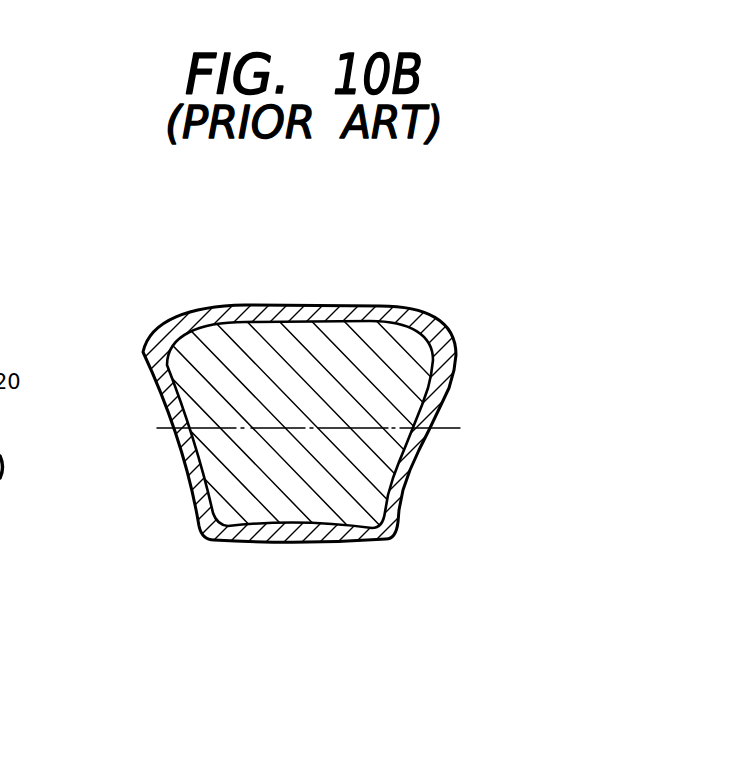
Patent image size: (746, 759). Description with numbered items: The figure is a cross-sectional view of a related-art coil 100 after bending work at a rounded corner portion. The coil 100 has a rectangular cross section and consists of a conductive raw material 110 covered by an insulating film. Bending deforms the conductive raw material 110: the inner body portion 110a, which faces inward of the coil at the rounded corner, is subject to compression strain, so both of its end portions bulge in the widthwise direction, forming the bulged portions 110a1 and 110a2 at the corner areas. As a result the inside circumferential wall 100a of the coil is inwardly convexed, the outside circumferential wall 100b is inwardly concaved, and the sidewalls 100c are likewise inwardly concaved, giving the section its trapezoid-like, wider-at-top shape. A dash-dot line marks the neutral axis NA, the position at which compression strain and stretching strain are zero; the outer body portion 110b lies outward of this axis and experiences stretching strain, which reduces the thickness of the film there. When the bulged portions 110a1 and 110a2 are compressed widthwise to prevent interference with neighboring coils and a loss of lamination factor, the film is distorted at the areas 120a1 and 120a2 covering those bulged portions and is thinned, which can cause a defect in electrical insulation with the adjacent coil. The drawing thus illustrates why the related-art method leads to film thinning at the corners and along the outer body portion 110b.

The coil 100 is at (365, 290).
The inside circumferential wall 100a is at (287, 306).
The outside circumferential wall 100b is at (296, 553).
The sidewalls 100c is at (196, 455).
The conductive raw material 110 is at (367, 468).
The inner body portion 110a is at (383, 355).
The bulged portion 110a1 is at (210, 345).
The bulged portion 110a2 is at (427, 378).
The outer body portion 110b is at (386, 505).
The film area 120a1 is at (152, 340).
The film area 120a2 is at (436, 393).
The neutral axis NA is at (462, 426).